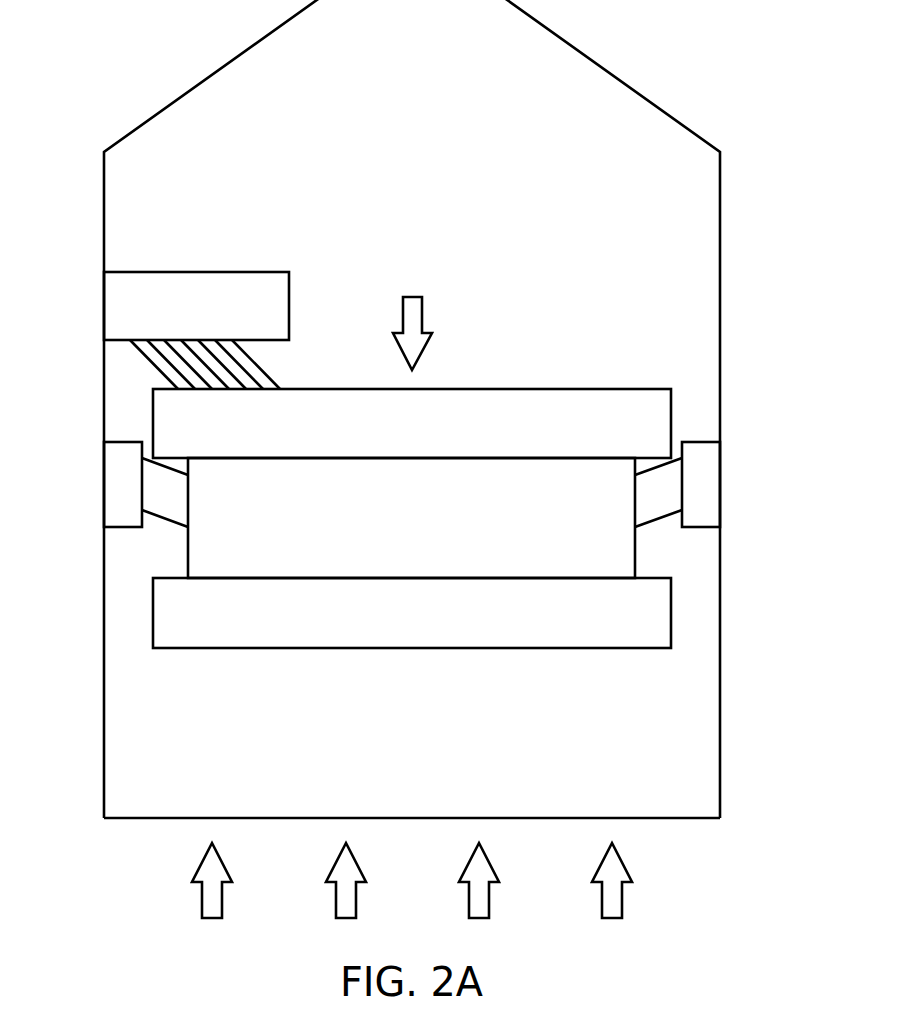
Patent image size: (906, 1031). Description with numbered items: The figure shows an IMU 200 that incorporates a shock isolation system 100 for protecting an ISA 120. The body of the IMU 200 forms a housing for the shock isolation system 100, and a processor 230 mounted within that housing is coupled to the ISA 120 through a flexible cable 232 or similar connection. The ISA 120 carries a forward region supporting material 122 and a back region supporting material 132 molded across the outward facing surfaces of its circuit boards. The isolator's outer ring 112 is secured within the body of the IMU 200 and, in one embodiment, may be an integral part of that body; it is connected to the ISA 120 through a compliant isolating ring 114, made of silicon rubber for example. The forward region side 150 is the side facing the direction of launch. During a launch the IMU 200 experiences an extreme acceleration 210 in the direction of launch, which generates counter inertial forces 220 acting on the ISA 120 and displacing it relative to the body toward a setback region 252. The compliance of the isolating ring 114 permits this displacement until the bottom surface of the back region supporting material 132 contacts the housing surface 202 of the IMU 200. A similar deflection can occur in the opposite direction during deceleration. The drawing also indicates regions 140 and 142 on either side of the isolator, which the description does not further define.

The shock isolation system 100 is at (437, 184).
The IMU 200 is at (720, 213).
The IMU housing surface 202 is at (296, 816).
The acceleration 210 is at (163, 893).
The counter inertial forces 220 is at (422, 315).
The processor 230 is at (193, 270).
The flexible cable 232 is at (152, 365).
The forward region supporting material 122 is at (432, 438).
The ISA 120 is at (432, 533).
The back region supporting material 132 is at (432, 628).
The outer ring 112 is at (104, 480).
The isolating ring 114 is at (181, 503).
The upper gas flow paths 140 is at (123, 411).
The lower gas flow paths 142 is at (135, 548).
The forward region side 150 is at (478, 361).
The setback region 252 is at (512, 731).